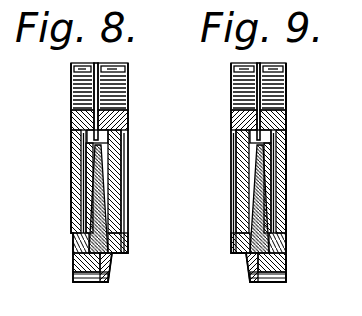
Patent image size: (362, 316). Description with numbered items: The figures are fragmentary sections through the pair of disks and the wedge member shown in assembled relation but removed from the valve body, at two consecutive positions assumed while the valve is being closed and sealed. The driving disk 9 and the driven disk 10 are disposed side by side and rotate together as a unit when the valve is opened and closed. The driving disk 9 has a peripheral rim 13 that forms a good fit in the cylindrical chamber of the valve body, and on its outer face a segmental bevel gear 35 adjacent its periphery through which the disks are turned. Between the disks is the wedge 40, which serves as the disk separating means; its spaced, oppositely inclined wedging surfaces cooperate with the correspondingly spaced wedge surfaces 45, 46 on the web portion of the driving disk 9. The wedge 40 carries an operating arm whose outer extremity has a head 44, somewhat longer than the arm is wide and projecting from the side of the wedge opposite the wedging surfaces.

In FIG. 8, the driving disk 9 is at (128, 125).
In FIG. 9, the driving disk 9 is at (232, 122).
In FIG. 8, the driven disk 10 is at (78, 123).
In FIG. 9, the driven disk 10 is at (286, 125).
In FIG. 9, the peripheral rim 13 is at (324, 172).
In FIG. 8, the segmental bevel gear 35 is at (110, 271).
In FIG. 9, the segmental bevel gear 35 is at (248, 264).
In FIG. 8, the wedge 40 is at (108, 195).
In FIG. 9, the wedge 40 is at (236, 196).
In FIG. 8, the head 44 is at (75, 267).
In FIG. 9, the head 44 is at (286, 261).
In FIG. 8, the wedge surface 45 is at (106, 153).
In FIG. 9, the wedge surface 46 is at (240, 155).